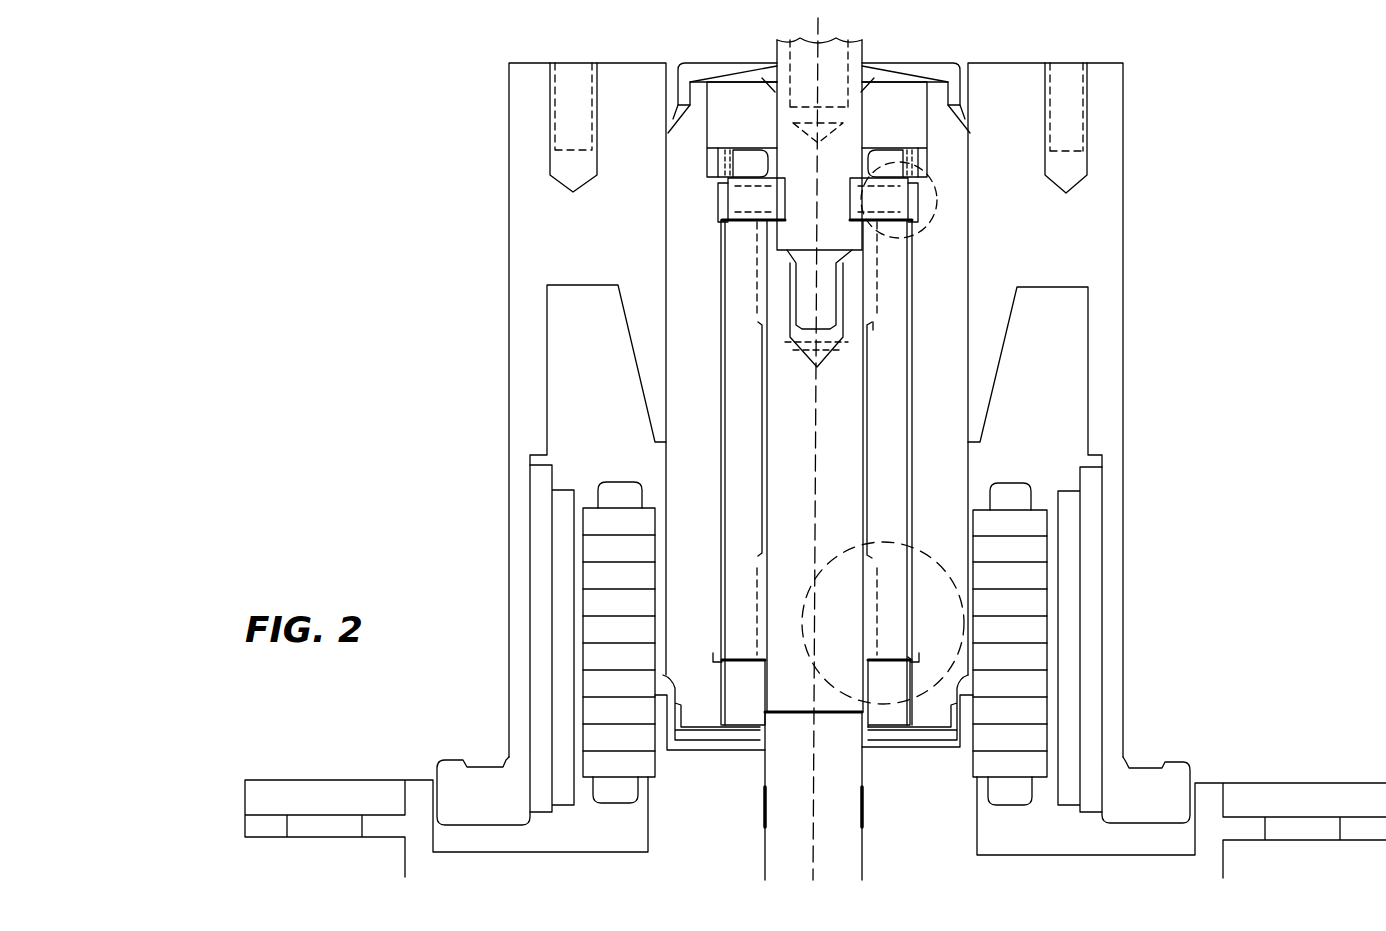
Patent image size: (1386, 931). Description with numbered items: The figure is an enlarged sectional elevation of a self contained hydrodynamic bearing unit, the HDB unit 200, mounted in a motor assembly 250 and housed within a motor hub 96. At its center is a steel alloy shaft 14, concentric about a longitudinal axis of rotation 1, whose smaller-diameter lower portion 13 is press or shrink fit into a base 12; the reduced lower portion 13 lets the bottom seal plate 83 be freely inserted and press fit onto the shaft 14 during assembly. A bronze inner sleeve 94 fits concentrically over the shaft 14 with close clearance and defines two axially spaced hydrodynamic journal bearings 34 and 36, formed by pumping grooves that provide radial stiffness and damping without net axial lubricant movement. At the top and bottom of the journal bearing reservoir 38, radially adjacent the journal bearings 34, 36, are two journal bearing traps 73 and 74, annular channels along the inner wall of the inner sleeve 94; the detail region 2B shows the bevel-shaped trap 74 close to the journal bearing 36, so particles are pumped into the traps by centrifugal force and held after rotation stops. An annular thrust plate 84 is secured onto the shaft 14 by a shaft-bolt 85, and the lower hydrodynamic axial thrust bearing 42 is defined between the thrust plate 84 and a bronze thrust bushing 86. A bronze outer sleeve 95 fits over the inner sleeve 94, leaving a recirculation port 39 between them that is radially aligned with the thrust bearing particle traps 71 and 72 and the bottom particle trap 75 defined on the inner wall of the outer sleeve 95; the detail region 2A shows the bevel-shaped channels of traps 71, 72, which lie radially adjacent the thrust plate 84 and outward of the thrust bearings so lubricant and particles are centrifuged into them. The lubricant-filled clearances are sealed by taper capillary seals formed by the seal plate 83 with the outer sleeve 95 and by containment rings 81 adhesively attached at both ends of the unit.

The longitudinal axis of rotation 1 is at (812, 858).
The base 12 is at (701, 844).
The lower portion 13 is at (773, 794).
The shaft 14 is at (825, 492).
The hydrodynamic journal bearing 34 is at (748, 312).
The hydrodynamic journal bearing 36 is at (756, 612).
The journal bearing reservoir 38 is at (868, 408).
The recirculation port 39 is at (912, 415).
The lower hydrodynamic axial thrust bearing 42 is at (718, 203).
The thrust bearing particle trap 71 is at (940, 187).
The thrust bearing particle trap 72 is at (927, 220).
The journal bearing trap 73 is at (870, 322).
The journal bearing trap 74 is at (870, 548).
The bottom particle trap 75 is at (908, 657).
The containment ring 81 is at (922, 62).
The bottom seal plate 83 is at (872, 692).
The thrust plate 84 is at (872, 211).
The shaft-bolt 85 is at (826, 174).
The thrust bushing 86 is at (873, 160).
The inner sleeve 94 is at (729, 447).
The outer sleeve 95 is at (681, 451).
The motor hub 96 is at (1063, 254).
The HDB unit 200 is at (616, 47).
The motor assembly 250 is at (503, 340).
The detail view of thrust bearing particle traps 2A is at (936, 180).
The detail view of journal bearing particle trap 2B is at (940, 540).